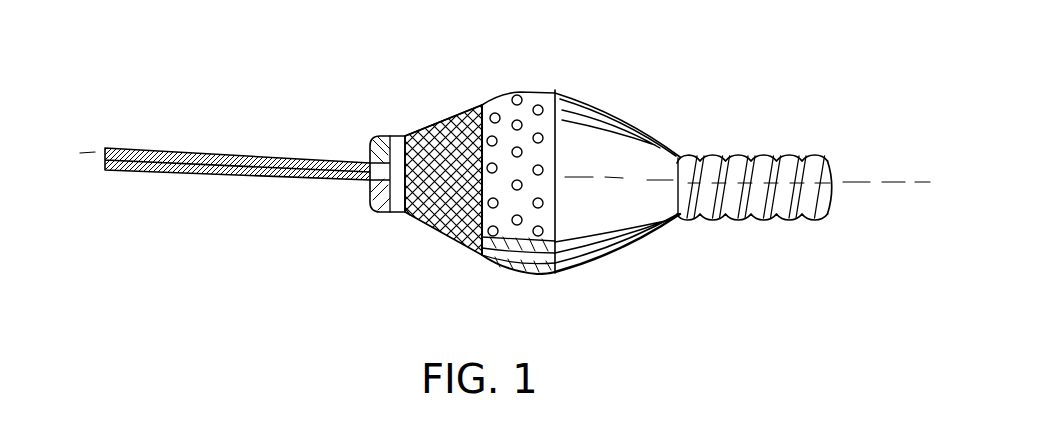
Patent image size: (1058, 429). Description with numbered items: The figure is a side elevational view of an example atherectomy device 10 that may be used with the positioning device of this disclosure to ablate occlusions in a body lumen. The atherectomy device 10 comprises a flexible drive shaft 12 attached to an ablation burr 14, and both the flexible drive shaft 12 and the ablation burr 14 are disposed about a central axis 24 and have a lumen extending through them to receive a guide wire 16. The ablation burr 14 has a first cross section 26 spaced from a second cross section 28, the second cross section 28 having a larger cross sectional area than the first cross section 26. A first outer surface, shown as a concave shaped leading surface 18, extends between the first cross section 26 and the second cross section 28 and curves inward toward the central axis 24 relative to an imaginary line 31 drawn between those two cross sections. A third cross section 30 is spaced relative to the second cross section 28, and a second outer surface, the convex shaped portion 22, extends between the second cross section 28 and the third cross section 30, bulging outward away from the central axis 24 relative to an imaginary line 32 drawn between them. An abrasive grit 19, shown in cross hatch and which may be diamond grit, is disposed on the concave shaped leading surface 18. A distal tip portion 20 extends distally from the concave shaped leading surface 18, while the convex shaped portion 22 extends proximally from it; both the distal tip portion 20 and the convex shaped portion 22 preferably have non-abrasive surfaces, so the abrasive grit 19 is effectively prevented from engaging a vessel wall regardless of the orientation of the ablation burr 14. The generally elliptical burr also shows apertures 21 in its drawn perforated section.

The atherectomy device 10 is at (640, 60).
The flexible drive shaft 12 is at (760, 205).
The ablation burr 14 is at (620, 258).
The guide wire 16 is at (160, 158).
The concave shaped leading surface 18 is at (438, 228).
The abrasive grit 19 is at (412, 225).
The distal tip portion 20 is at (370, 152).
The apertures 21 is at (552, 258).
The convex shaped portion 22 is at (523, 272).
The central axis 24 is at (631, 177).
The first cross section 26 is at (401, 131).
The second cross section 28 is at (487, 90).
The third cross section 30 is at (548, 90).
The imaginary line 31 is at (415, 118).
The imaginary line 32 is at (597, 100).